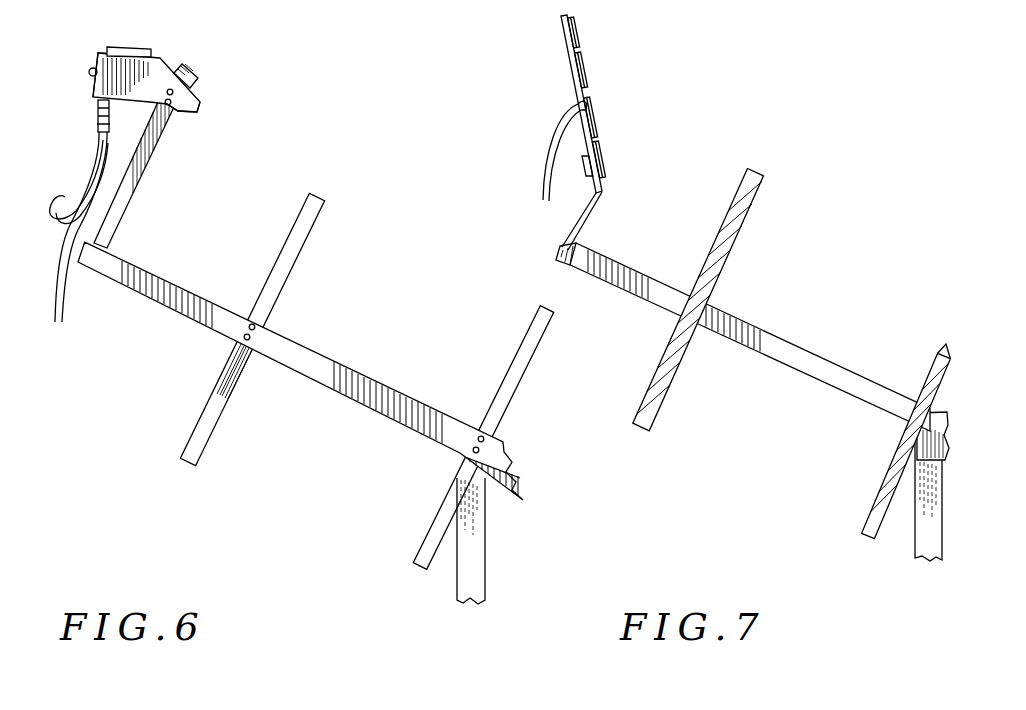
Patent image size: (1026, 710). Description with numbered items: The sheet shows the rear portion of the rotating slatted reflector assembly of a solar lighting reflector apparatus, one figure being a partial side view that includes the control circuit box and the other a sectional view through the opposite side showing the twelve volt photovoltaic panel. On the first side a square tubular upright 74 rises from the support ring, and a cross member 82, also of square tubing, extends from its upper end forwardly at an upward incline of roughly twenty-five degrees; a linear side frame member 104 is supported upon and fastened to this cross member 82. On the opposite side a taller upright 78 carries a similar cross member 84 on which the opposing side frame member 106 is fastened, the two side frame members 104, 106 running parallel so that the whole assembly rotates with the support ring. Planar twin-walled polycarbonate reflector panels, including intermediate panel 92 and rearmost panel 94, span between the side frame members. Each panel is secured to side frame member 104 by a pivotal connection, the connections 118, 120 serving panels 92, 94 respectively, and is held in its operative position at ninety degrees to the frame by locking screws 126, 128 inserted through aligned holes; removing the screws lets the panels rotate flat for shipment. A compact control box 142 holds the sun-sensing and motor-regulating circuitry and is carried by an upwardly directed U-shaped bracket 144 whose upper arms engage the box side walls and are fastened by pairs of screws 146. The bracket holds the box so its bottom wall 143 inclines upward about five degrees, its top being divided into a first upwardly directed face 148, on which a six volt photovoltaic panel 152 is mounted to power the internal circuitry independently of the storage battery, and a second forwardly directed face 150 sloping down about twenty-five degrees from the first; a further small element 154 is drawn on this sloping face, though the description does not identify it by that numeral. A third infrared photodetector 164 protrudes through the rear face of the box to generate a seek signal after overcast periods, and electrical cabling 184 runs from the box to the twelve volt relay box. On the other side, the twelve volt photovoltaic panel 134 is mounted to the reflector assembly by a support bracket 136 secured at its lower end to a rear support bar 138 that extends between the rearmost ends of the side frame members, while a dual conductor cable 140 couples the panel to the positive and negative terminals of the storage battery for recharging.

In FIG. 6, the upright 74 is at (480, 565).
In FIG. 7, the upright 78 is at (918, 528).
In FIG. 6, the cross member 82 is at (507, 497).
In FIG. 7, the cross member 84 is at (922, 437).
In FIG. 6, the intermediate reflector panel 92 is at (531, 350).
In FIG. 7, the intermediate reflector panel 92 is at (931, 386).
In FIG. 6, the rearmost reflector panel 94 is at (312, 233).
In FIG. 7, the rearmost reflector panel 94 is at (758, 172).
In FIG. 6, the side frame member 104 is at (397, 400).
In FIG. 7, the side frame member 106 is at (787, 342).
In FIG. 6, the pivotal connection 118 is at (465, 447).
In FIG. 6, the pivotal connection 120 is at (240, 355).
In FIG. 6, the locking screw 126 is at (480, 435).
In FIG. 6, the locking screw 128 is at (256, 320).
In FIG. 7, the 12 volt photovoltaic panel 134 is at (584, 82).
In FIG. 7, the support bracket 136 is at (572, 220).
In FIG. 7, the rear support bar 138 is at (585, 244).
In FIG. 7, the dual conductor cable 140 is at (543, 178).
In FIG. 6, the control box 142 is at (160, 56).
In FIG. 6, the bottom wall 143 is at (98, 110).
In FIG. 6, the U-shaped bracket 144 is at (139, 180).
In FIG. 6, the screws 146 is at (171, 108).
In FIG. 6, the first upwardly directed face 148 is at (118, 32).
In FIG. 6, the second forwardly directed face 150 is at (203, 100).
In FIG. 6, the 6 volt photovoltaic panel 152 is at (150, 38).
In FIG. 6, the knob 154 is at (200, 67).
In FIG. 6, the third infrared photodetector 164 is at (91, 75).
In FIG. 6, the electrical cabling 184 is at (55, 303).